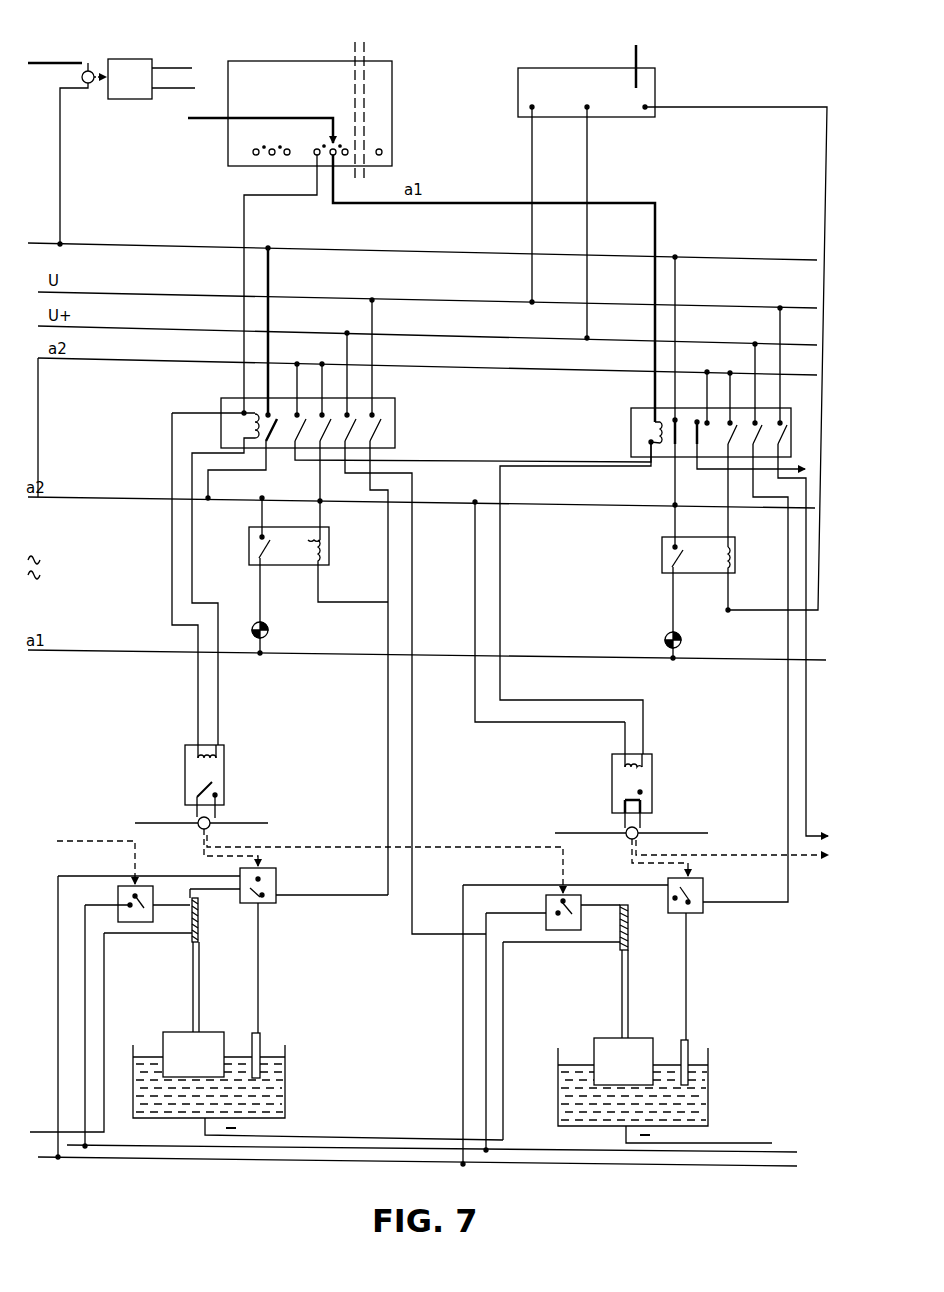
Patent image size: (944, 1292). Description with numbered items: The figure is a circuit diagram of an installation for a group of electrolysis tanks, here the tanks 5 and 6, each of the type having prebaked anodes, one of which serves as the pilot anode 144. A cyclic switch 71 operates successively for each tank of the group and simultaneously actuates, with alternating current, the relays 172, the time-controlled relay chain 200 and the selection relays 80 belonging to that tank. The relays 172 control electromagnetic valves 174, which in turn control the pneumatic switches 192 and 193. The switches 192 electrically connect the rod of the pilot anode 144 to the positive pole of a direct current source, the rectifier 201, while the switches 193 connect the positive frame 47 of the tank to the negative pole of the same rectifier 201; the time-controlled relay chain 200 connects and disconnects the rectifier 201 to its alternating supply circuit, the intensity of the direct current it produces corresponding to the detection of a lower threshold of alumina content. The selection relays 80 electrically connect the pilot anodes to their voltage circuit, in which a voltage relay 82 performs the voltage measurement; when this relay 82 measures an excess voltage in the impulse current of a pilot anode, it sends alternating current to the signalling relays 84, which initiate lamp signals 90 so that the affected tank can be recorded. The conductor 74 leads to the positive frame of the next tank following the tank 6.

The time-controlled relay chain 200 is at (90, 68).
The rectifier 201 is at (148, 57).
The cyclic switch 71 is at (393, 83).
The voltage relay 82 is at (575, 68).
The selection relay 80 is at (396, 418).
The signalling relay 84 is at (249, 532).
The lamp signal 90 is at (270, 628).
The relay 172 is at (224, 771).
The electromagnetic valve 174 is at (212, 820).
The pneumatic switch 192 is at (276, 882).
The pneumatic switch 193 is at (118, 896).
The positive frame 47 is at (188, 922).
The pilot anode 144 is at (260, 1040).
The tank 5 is at (286, 1104).
The tank 6 is at (710, 1081).
The conductor 74 is at (806, 830).